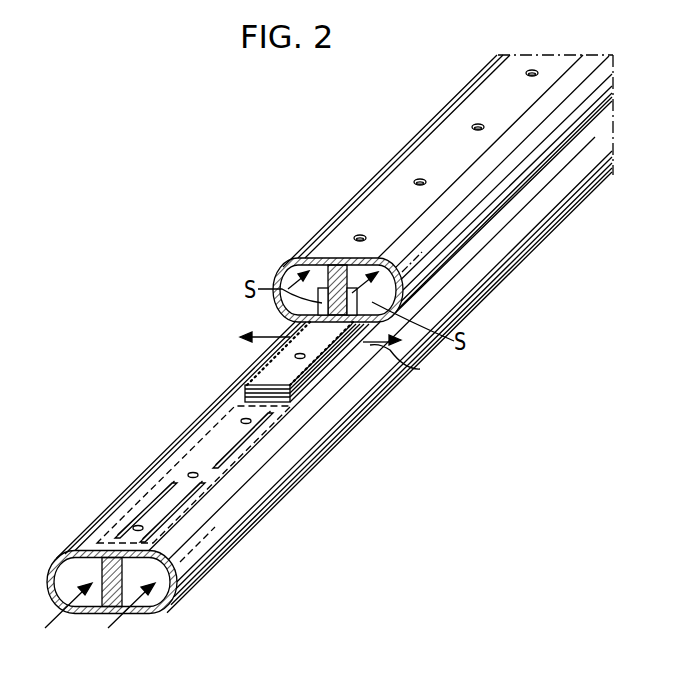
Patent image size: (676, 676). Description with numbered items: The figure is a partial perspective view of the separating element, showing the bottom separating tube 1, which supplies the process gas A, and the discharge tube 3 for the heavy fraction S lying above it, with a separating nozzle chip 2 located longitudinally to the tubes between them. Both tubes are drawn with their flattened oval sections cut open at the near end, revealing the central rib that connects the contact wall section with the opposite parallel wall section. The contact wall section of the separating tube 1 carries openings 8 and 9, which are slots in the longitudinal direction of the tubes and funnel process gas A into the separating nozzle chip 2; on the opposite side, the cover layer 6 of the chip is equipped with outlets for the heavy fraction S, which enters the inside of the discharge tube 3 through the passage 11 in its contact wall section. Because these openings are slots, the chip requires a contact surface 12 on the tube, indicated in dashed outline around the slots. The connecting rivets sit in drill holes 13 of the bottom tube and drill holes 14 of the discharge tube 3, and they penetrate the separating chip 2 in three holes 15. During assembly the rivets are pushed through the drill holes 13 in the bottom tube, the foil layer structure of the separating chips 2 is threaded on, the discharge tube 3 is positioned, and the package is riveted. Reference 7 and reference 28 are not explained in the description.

The separating tube 1 is at (247, 536).
The separating nozzle chip 2 is at (322, 353).
The discharge tube 3 is at (413, 126).
The cover layer 6 is at (326, 384).
The end plate 7 is at (250, 400).
The opening 8 is at (210, 440).
The opening 9 is at (253, 430).
The passage 11 is at (352, 297).
The contact surface 12 is at (273, 506).
The drill hole 13 is at (190, 474).
The drill hole 14 is at (416, 178).
The hole 15 is at (333, 355).
The perforated strip 28 is at (263, 372).